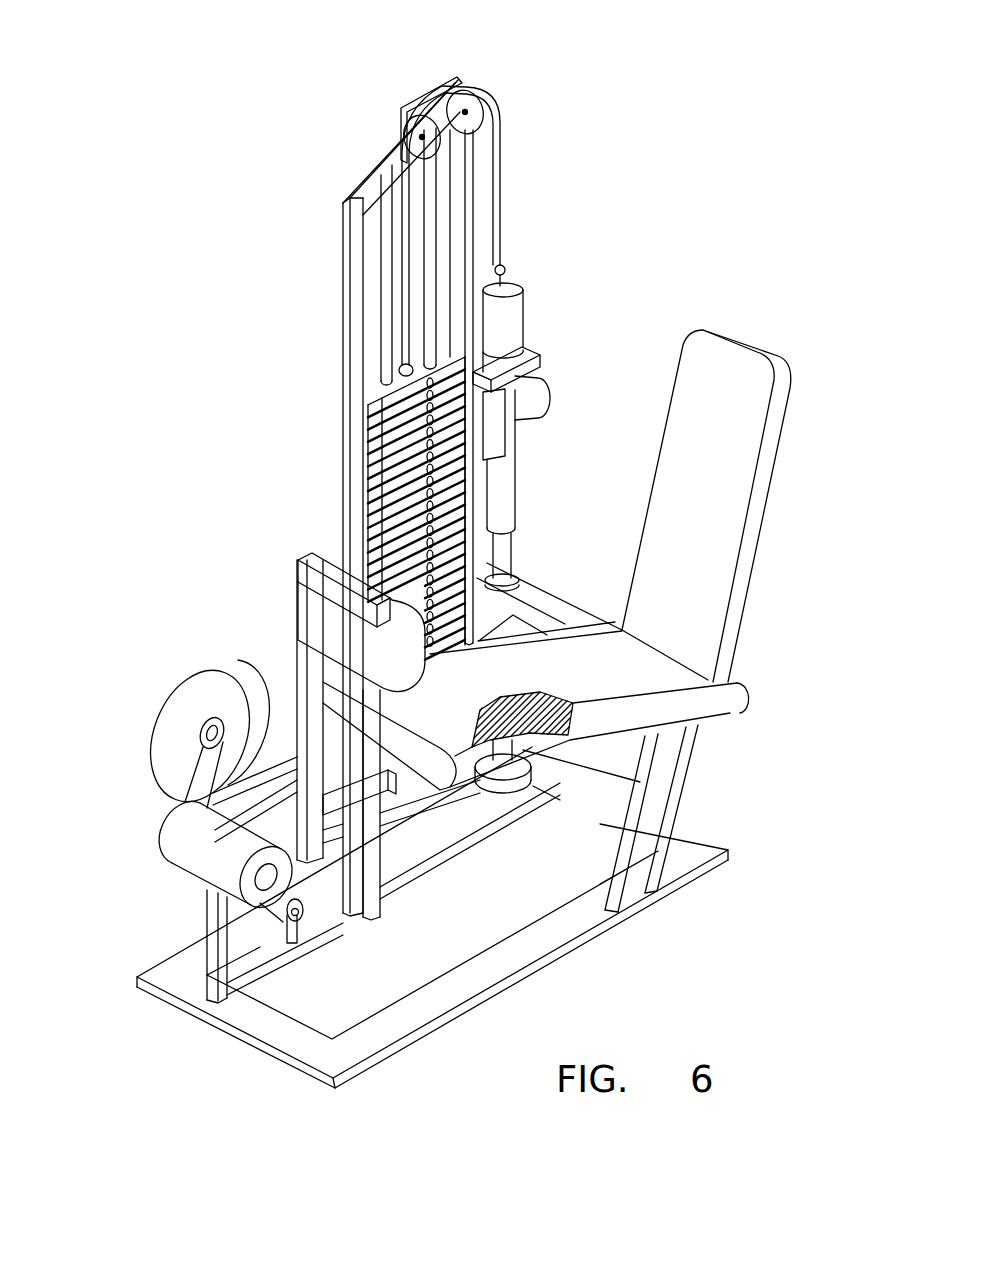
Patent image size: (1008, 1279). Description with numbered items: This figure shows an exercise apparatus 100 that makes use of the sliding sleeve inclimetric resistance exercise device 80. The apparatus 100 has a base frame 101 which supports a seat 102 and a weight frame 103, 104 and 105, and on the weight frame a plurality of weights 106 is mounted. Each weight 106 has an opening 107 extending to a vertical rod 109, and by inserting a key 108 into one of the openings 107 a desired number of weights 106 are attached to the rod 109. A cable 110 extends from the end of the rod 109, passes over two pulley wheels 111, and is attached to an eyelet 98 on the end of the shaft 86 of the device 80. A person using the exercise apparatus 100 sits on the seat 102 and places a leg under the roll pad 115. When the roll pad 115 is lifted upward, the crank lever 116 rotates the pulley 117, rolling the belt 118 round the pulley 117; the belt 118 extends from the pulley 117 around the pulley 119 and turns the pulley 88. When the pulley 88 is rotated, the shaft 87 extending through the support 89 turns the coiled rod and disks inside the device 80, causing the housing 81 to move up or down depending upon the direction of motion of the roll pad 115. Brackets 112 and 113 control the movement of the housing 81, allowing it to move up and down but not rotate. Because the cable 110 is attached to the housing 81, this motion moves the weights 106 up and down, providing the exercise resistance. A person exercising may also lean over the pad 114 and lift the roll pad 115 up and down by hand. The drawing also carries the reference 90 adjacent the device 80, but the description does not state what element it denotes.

The exercise apparatus 100 is at (249, 1121).
The base frame 101 is at (447, 1003).
The seat 102 is at (655, 677).
The weight frame 103 is at (352, 220).
The weight frame 104 is at (370, 183).
The weight frame 105 is at (463, 175).
The weights 106 is at (380, 398).
The opening 107 is at (422, 468).
The key 108 is at (420, 431).
The vertical rod 109 is at (397, 367).
The cable 110 is at (400, 256).
The pulley wheels 111 is at (421, 135).
The bracket 112 is at (681, 493).
The bracket 113 is at (497, 430).
The pad 114 is at (315, 625).
The roll pad 115 is at (207, 850).
The crank lever 116 is at (205, 767).
The pulley 117 is at (208, 700).
The belt 118 is at (183, 787).
The pulley 119 is at (303, 910).
The sliding sleeve inclimetric resistance exercise device 80 is at (657, 274).
The housing 81 is at (512, 486).
The shaft 86 is at (507, 286).
The shaft 87 is at (505, 746).
The pulley 88 is at (525, 775).
The support 89 is at (525, 581).
The rod 90 is at (517, 575).
The eyelet 98 is at (505, 271).